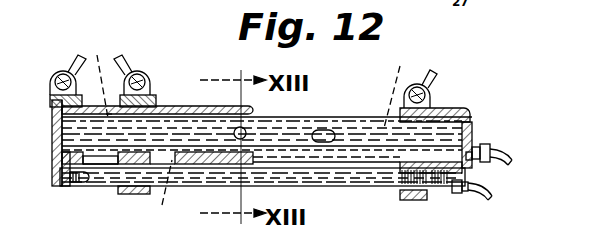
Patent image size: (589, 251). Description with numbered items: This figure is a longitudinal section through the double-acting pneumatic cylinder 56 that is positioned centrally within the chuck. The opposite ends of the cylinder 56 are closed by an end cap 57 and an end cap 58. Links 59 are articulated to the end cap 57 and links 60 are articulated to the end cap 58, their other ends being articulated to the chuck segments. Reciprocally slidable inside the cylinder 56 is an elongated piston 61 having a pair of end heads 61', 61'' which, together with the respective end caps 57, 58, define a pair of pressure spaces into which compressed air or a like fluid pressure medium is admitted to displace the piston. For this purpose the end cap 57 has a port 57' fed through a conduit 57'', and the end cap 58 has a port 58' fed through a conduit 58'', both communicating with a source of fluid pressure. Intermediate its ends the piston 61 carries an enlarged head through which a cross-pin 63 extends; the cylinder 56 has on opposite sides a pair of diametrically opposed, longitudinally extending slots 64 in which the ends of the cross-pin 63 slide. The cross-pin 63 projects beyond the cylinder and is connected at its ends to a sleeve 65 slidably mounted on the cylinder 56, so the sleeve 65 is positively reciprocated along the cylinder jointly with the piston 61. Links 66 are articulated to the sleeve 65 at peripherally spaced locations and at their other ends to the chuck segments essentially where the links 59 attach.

The double-acting pneumatic cylinder 56 is at (392, 160).
The end cap 57 is at (40, 143).
The port 57' is at (83, 197).
The conduit 57'' is at (480, 203).
The end cap 58 is at (291, 145).
The port 58' is at (501, 172).
The conduit 58'' is at (510, 146).
The links 59 is at (70, 62).
The links 60 is at (437, 82).
The elongated piston 61 is at (127, 190).
The end head 61' is at (100, 77).
The end head 61'' is at (405, 88).
The cross-pin 63 is at (238, 139).
The longitudinally extending slots 64 is at (318, 136).
The sleeve 65 is at (172, 106).
The links 66 is at (130, 62).